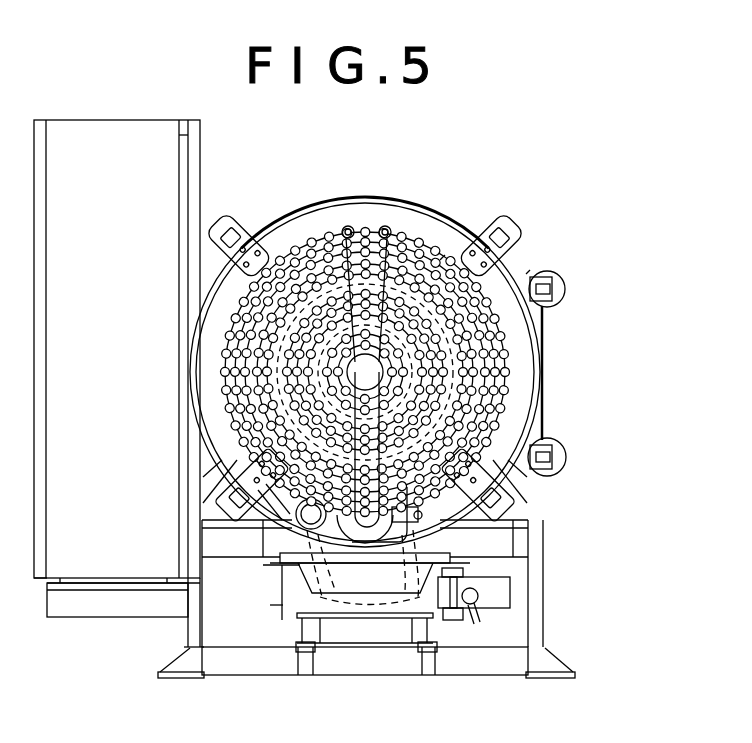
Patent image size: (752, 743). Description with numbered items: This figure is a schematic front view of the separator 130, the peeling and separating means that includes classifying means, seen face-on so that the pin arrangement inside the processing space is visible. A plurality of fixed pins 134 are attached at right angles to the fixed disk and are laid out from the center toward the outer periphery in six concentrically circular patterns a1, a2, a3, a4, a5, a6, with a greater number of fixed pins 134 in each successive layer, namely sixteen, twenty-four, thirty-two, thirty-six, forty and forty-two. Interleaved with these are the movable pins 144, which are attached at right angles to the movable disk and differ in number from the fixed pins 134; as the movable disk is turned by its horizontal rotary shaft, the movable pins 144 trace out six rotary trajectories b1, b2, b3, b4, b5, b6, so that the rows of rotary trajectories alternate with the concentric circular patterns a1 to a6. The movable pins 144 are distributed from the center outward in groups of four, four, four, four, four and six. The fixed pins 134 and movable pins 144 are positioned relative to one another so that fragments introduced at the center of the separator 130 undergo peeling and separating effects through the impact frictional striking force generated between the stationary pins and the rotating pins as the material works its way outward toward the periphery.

The separator 130 is at (548, 190).
The fixed pins 134 is at (425, 232).
The movable pins 144 is at (403, 207).
The concentrically circular pattern a1 is at (275, 400).
The concentrically circular pattern a2 is at (250, 378).
The concentrically circular pattern a3 is at (250, 345).
The concentrically circular pattern a4 is at (283, 242).
The concentrically circular pattern a5 is at (353, 290).
The concentrically circular pattern a6 is at (362, 226).
The rotary trajectory b1 is at (495, 400).
The rotary trajectory b2 is at (500, 385).
The rotary trajectory b3 is at (470, 370).
The rotary trajectory b4 is at (478, 348).
The rotary trajectory b5 is at (530, 270).
The rotary trajectory b6 is at (440, 260).